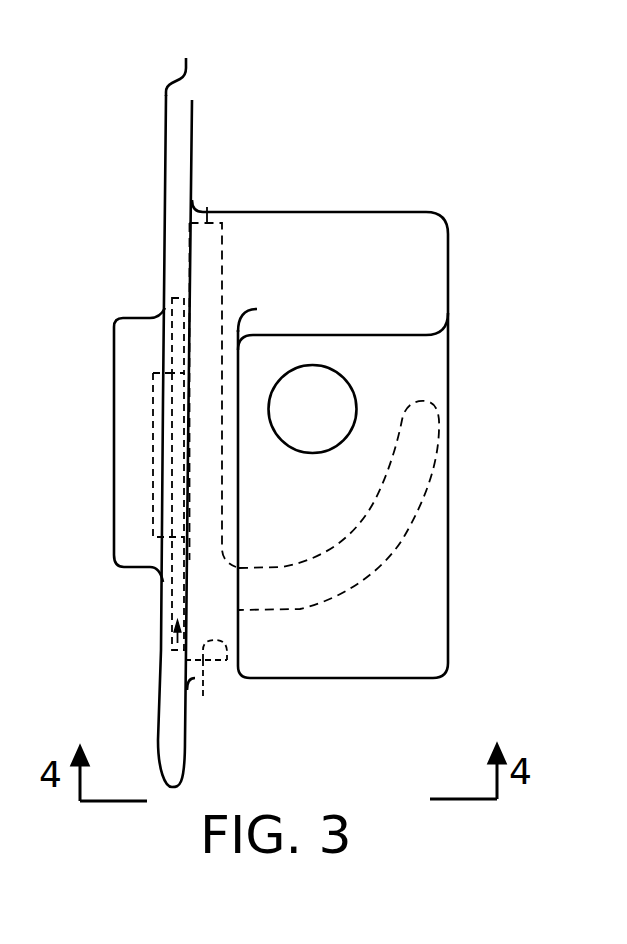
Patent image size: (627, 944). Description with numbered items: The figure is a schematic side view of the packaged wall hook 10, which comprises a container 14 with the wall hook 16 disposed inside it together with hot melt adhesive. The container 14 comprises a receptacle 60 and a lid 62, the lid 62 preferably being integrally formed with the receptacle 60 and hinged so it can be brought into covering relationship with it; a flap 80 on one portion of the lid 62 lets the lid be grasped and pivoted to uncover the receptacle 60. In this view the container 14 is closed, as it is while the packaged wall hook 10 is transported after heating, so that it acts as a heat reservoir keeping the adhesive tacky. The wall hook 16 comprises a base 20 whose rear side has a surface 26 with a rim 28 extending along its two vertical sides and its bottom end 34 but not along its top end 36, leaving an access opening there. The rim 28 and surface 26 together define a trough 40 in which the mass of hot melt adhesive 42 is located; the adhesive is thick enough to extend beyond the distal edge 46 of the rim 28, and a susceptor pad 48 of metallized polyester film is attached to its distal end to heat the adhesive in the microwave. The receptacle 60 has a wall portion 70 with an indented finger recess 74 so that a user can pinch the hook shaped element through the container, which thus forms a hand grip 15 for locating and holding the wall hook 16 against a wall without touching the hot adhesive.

The packaged wall hook 10 is at (480, 247).
The container 14 is at (447, 488).
The hand grip 15 is at (408, 363).
The wall hook 16 is at (395, 548).
The base 20 is at (228, 660).
The surface 26 is at (187, 337).
The rim 28 is at (160, 585).
The bottom end 34 is at (203, 700).
The top end 36 is at (210, 212).
The trough 40 is at (185, 660).
The mass of hot melt adhesive 42 is at (173, 442).
The distal edge 46 is at (165, 305).
The susceptor pad 48 is at (157, 388).
The receptacle 60 is at (370, 678).
The lid 62 is at (162, 620).
The wall portion 70 is at (420, 630).
The finger recess 74 is at (357, 400).
The flap 80 is at (178, 84).